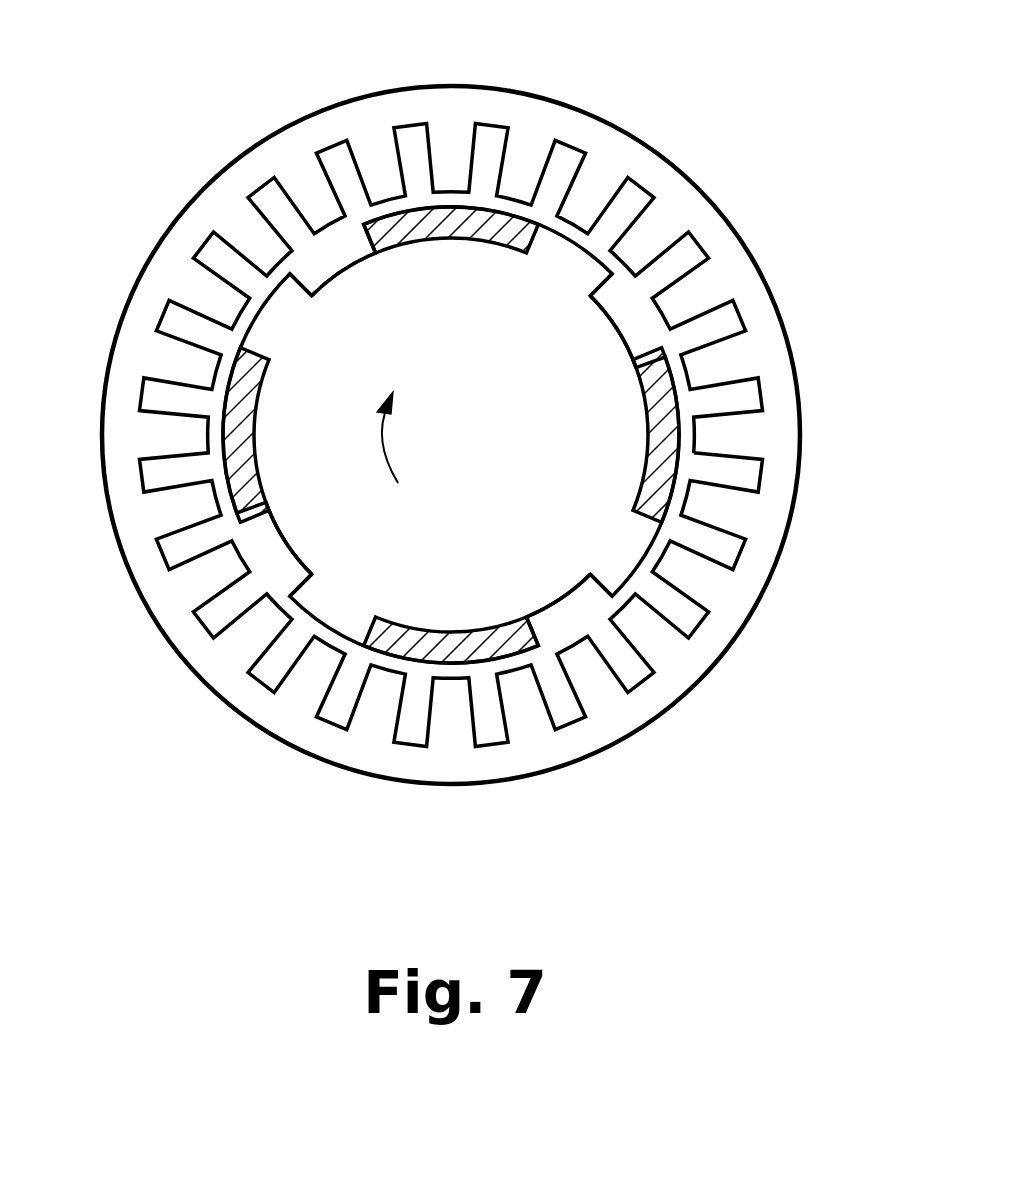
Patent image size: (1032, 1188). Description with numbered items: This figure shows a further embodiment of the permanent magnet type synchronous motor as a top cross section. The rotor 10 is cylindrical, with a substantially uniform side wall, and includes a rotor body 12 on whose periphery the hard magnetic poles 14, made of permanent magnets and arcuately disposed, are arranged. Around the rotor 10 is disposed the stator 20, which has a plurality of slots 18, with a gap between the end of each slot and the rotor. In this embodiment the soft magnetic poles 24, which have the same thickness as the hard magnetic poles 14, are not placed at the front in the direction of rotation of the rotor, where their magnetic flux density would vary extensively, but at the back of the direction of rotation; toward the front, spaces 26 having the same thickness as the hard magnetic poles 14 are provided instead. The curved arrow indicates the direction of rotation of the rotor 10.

The rotor 10 is at (516, 409).
The rotor body 12 is at (585, 375).
The hard magnetic poles 14 is at (428, 228).
The slots 18 is at (411, 135).
The stator 20 is at (788, 350).
The soft magnetic poles 24 is at (568, 268).
The spaces 26 is at (337, 262).